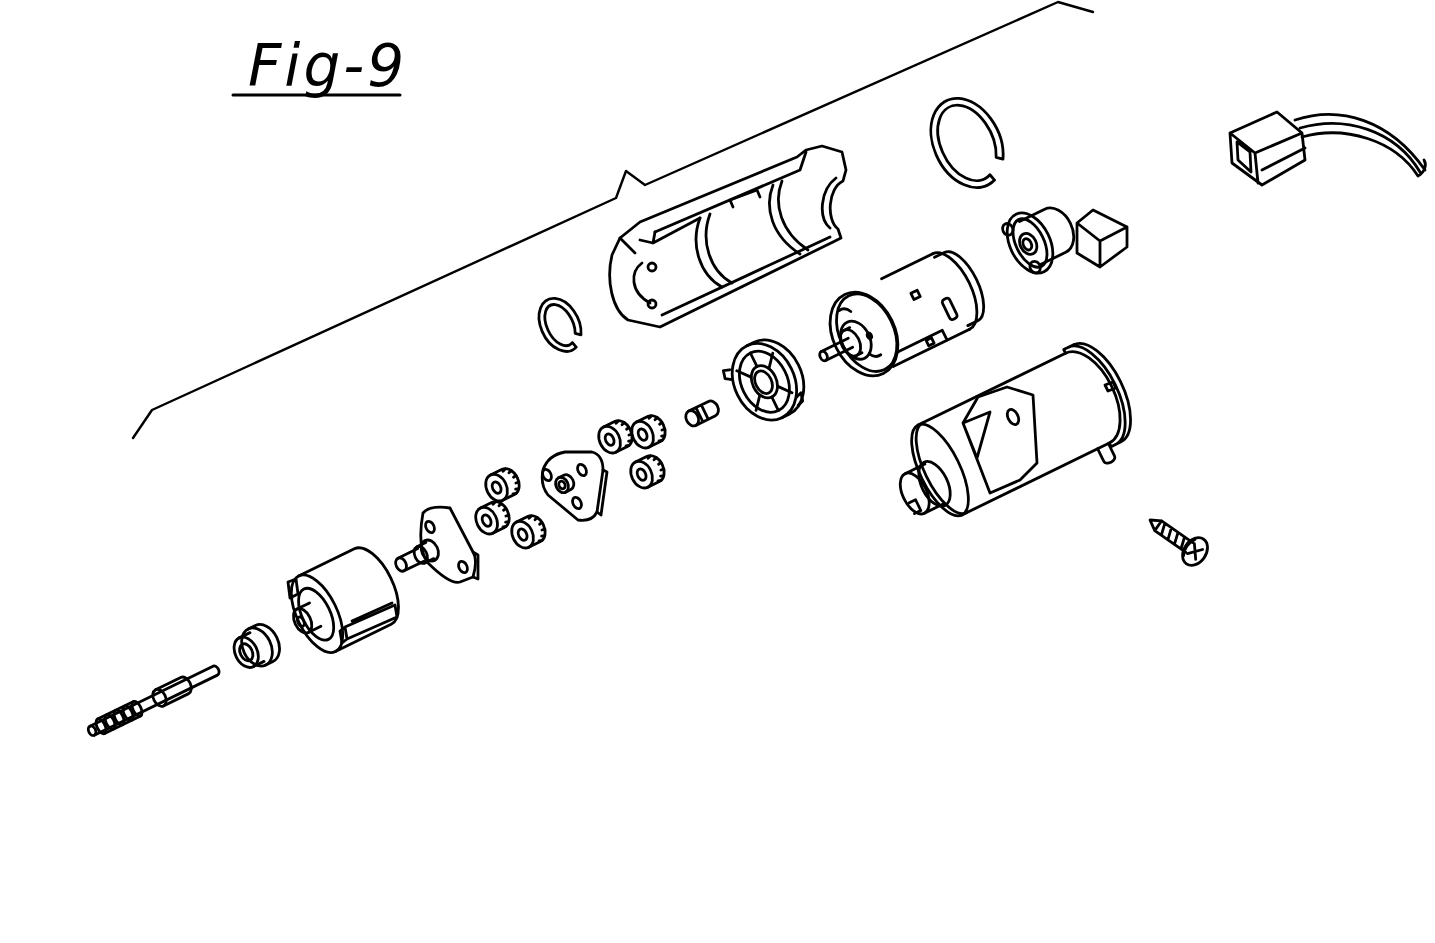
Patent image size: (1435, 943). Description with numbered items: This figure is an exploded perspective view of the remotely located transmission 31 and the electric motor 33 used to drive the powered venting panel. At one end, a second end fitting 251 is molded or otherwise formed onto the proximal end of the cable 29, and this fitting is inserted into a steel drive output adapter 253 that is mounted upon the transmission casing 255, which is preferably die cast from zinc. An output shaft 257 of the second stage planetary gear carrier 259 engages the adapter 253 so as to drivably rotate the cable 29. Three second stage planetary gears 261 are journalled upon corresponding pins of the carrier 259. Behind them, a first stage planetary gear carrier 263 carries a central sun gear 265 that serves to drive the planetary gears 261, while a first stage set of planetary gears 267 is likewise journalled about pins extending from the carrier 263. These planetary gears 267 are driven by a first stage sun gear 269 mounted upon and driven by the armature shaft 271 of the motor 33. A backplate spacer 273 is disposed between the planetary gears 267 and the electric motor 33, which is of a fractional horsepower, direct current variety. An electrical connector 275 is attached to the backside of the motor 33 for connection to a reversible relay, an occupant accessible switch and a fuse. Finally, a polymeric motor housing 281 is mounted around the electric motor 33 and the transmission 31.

The cable 29 is at (138, 720).
The transmission 31 is at (592, 592).
The electric motor 33 is at (888, 282).
The second end fitting 251 is at (183, 683).
The drive output adapter 253 is at (243, 633).
The transmission casing 255 is at (342, 570).
The output shaft 257 is at (414, 547).
The second stage planetary gear carrier 259 is at (435, 540).
The second stage planetary gears 261 is at (497, 472).
The first stage planetary gear carrier 263 is at (582, 500).
The central sun gear 265 is at (562, 480).
The first stage planetary gears 267 is at (606, 430).
The first stage sun gear 269 is at (702, 428).
The armature shaft 271 is at (830, 355).
The backplate spacer 273 is at (737, 346).
The electrical connector 275 is at (1053, 213).
The motor housing 281 is at (798, 162).